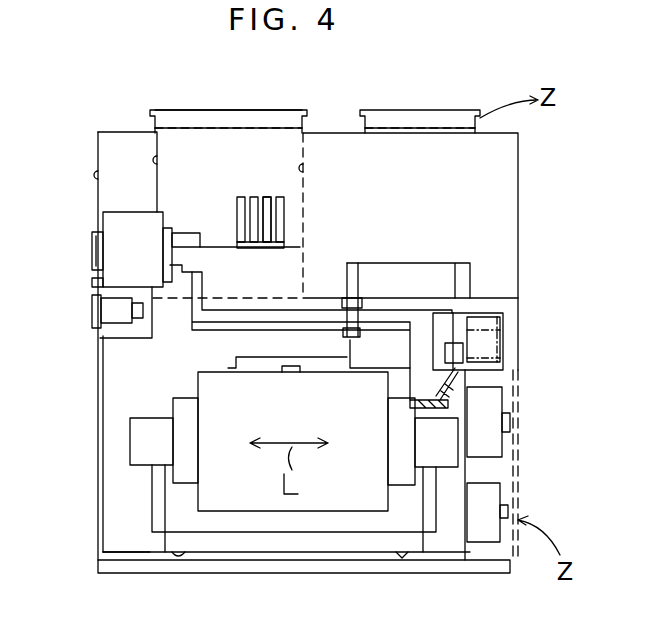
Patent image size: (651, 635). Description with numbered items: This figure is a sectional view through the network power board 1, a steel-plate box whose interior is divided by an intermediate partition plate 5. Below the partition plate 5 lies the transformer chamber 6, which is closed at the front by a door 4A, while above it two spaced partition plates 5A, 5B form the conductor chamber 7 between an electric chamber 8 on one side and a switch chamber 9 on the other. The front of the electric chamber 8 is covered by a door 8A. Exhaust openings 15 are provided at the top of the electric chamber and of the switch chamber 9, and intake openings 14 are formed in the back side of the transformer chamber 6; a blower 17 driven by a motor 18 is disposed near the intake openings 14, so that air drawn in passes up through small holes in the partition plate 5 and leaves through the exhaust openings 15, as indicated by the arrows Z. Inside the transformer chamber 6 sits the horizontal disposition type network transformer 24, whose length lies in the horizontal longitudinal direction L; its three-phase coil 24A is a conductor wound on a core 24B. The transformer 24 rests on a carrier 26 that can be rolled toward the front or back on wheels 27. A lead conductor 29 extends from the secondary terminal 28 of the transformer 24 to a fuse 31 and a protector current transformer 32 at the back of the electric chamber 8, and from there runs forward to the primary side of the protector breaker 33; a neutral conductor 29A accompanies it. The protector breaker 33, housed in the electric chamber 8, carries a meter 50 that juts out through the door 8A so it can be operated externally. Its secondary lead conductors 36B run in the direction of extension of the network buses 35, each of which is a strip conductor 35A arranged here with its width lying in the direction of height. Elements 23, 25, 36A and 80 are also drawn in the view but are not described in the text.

The network power board 1 is at (52, 90).
The door 4A is at (97, 440).
The intermediate partition plate 5 is at (497, 295).
The partition plate 5A is at (150, 160).
The partition plate 5B is at (305, 168).
The transformer chamber 6 is at (112, 518).
The conductor chamber 7 is at (262, 136).
The electric chamber 8 is at (125, 152).
The door 8A is at (98, 175).
The switch chamber 9 is at (497, 182).
The intake opening 14 is at (515, 455).
The exhaust opening 15 is at (207, 120).
The blower 17 is at (493, 398).
The motor 18 is at (508, 512).
The pipe 23 is at (353, 262).
The network transformer 24 is at (266, 401).
The three-phase coil 24A is at (323, 515).
The core 24B is at (138, 443).
The plate 25 is at (347, 352).
The carrier 26 is at (250, 545).
The wheel 27 is at (402, 553).
The secondary terminal 28 is at (433, 402).
The lead conductor 29 is at (322, 307).
The neutral conductor 29A is at (192, 338).
The fuse 31 is at (463, 355).
The protector current transformer 32 is at (505, 322).
The protector breaker 33 is at (115, 230).
The network bus 35 is at (298, 207).
The strip conductor 35A is at (270, 197).
The board portion 36A is at (210, 290).
The secondary lead conductor 36B is at (215, 237).
The meter 50 is at (92, 248).
The valve 80 is at (92, 310).